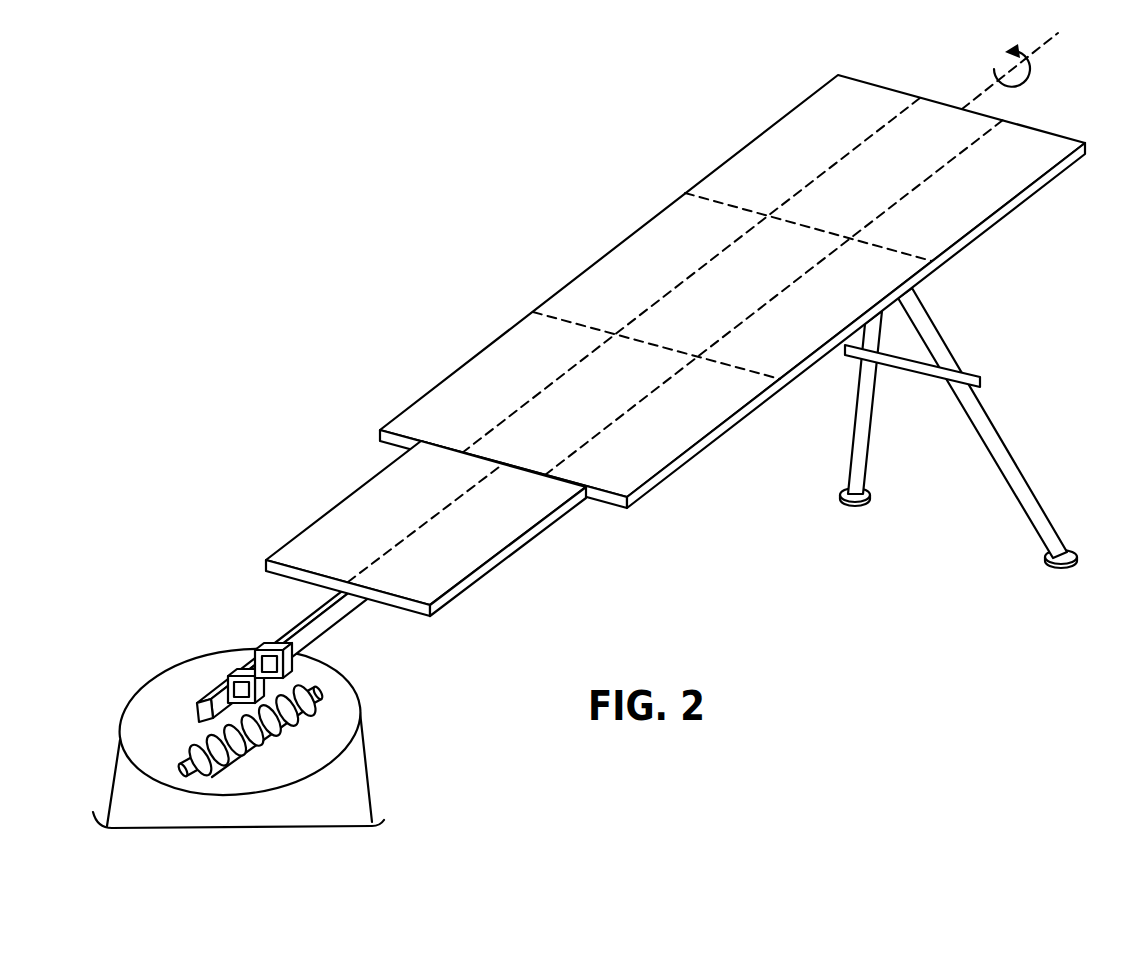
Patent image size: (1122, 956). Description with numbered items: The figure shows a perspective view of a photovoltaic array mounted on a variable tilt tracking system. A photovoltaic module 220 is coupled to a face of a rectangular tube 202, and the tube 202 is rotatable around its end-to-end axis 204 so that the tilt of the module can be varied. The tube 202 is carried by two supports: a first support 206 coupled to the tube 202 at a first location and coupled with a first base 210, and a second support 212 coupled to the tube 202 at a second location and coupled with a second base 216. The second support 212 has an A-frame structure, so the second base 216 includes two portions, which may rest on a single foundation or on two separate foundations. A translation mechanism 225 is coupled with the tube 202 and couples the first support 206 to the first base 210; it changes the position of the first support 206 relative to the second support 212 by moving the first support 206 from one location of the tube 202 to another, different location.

The tube 202 is at (300, 626).
The end-to-end axis 204 is at (1044, 36).
The first support 206 is at (256, 707).
The first base 210 is at (362, 788).
The second support 212 is at (938, 333).
The second base 216 is at (857, 504).
The photovoltaic module 220 is at (863, 121).
The translation mechanism 225 is at (194, 770).